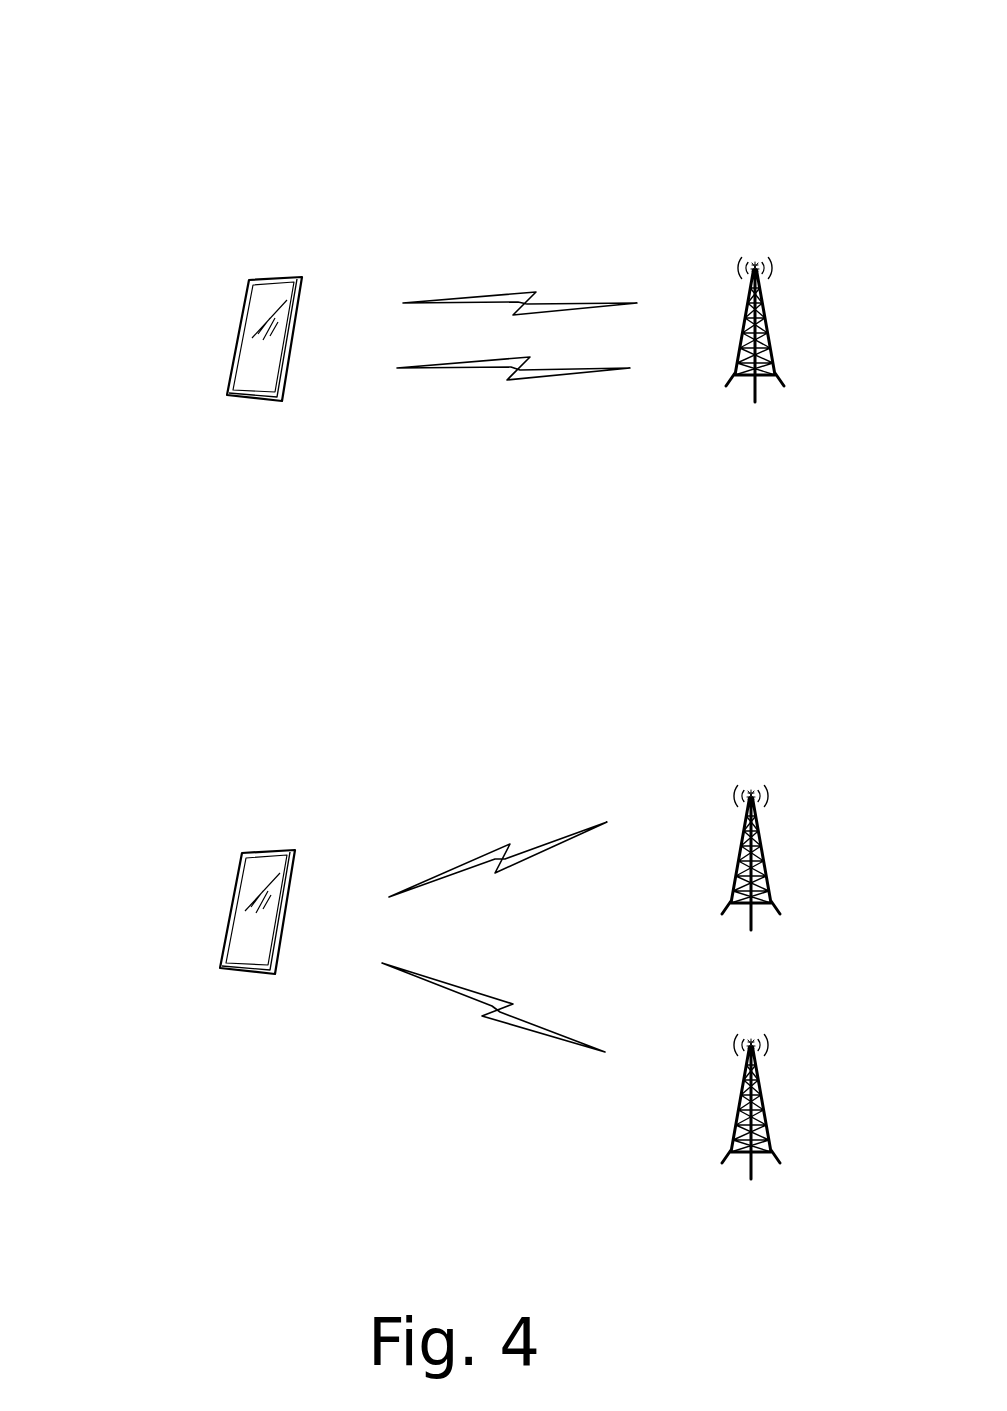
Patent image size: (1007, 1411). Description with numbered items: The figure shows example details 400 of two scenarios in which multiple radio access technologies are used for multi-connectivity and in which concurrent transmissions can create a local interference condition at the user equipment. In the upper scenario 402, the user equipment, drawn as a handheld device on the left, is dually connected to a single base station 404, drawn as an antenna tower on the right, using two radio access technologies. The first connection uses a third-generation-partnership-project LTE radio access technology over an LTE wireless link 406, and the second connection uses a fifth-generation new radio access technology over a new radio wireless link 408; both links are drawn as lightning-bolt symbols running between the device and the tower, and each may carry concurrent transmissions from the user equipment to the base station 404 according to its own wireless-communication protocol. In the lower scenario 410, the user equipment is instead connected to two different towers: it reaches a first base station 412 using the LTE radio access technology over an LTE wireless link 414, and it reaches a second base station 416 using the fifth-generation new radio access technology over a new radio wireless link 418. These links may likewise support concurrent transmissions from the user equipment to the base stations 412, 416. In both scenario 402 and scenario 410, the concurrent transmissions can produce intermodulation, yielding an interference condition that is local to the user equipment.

The example details 400 is at (146, 45).
The scenario 402 is at (157, 165).
The base station 404 is at (758, 244).
The 3GPP LTE wireless link 406 is at (528, 283).
The 5G NR wireless link 408 is at (508, 393).
The scenario 410 is at (157, 613).
The first base station 412 is at (755, 775).
The 3GPP LTE wireless link 414 is at (504, 830).
The second base station 416 is at (752, 1023).
The 5G NR wireless link 418 is at (477, 1030).